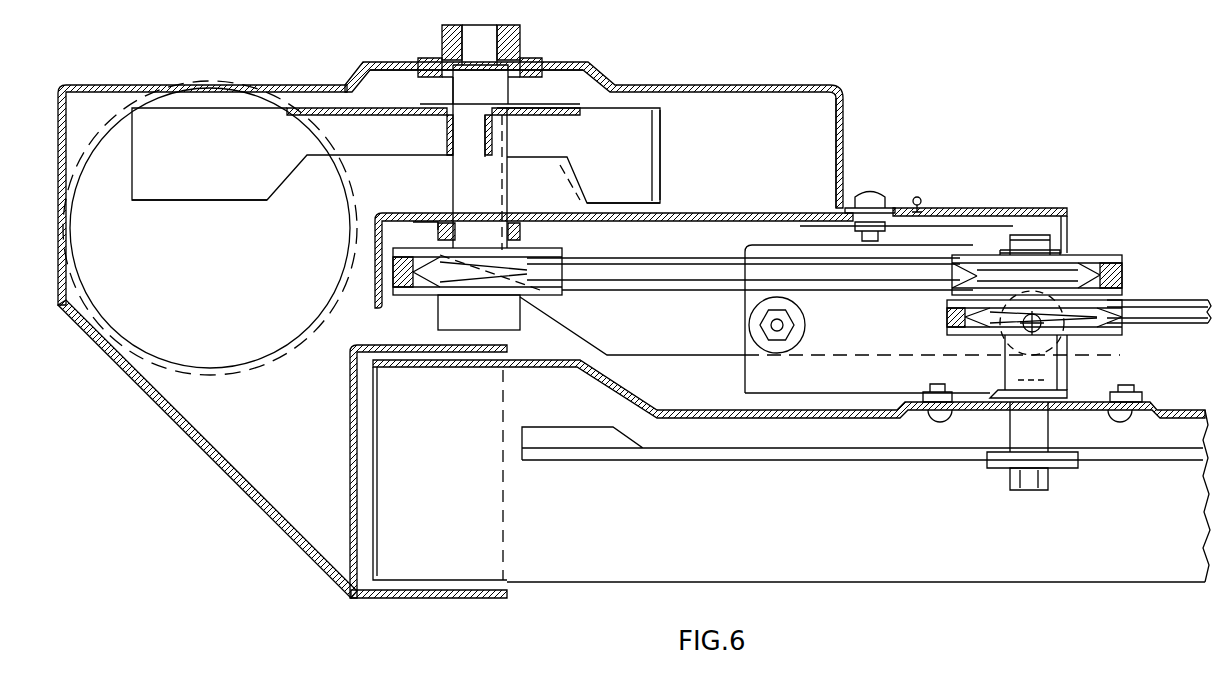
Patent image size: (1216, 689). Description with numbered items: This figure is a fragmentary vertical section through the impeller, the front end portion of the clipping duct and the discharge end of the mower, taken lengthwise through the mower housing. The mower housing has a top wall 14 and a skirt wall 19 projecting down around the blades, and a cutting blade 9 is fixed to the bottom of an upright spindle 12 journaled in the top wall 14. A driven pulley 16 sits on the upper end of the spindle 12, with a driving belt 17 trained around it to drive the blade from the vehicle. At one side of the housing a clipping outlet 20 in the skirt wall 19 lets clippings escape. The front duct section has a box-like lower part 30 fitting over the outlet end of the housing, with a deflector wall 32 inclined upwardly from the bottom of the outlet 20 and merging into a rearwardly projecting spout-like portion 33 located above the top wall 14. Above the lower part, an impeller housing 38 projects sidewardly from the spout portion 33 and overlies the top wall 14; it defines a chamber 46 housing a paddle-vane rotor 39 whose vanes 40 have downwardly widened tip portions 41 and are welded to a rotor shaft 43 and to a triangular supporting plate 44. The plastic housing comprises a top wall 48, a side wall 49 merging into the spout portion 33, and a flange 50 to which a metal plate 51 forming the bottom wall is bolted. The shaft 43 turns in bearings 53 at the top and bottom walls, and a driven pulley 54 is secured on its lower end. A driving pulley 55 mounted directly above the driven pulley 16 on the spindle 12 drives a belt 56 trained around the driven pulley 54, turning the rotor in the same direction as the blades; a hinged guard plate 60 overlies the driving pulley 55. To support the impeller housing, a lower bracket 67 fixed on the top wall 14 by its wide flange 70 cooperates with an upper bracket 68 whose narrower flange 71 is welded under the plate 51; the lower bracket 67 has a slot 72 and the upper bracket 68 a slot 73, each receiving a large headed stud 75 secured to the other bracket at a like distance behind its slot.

The cutting blade 9 is at (660, 450).
The spindle 12 is at (1010, 437).
The top wall 14 is at (686, 410).
The driven pulley 16 is at (1083, 322).
The driving belt 17 is at (1162, 304).
The skirt wall 19 is at (589, 578).
The clipping outlet 20 is at (390, 390).
The box-like lower part 30 is at (435, 598).
The deflector wall 32 is at (252, 496).
The spout-like portion 33 is at (102, 125).
The impeller housing 38 is at (752, 78).
The paddle-vane rotor 39 is at (672, 157).
The vane 40 is at (222, 169).
The tip portion 41 is at (238, 190).
The rotor shaft 43 is at (453, 180).
The supporting plate 44 is at (548, 108).
The chamber 46 is at (822, 148).
The top wall 48 is at (700, 86).
The side wall 49 is at (846, 119).
The flange 50 is at (897, 206).
The metal plate 51 is at (753, 213).
The bearing 53 is at (445, 42).
The driven pulley 54 is at (432, 290).
The driving pulley 55 is at (1085, 265).
The belt 56 is at (642, 272).
The guard plate 60 is at (990, 208).
The lower bracket 67 is at (940, 252).
The upper bracket 68 is at (648, 331).
The flange 70 is at (858, 392).
The flange 71 is at (800, 240).
The slot 72 is at (755, 330).
The slot 73 is at (1070, 340).
The large headed stud 75 is at (800, 327).